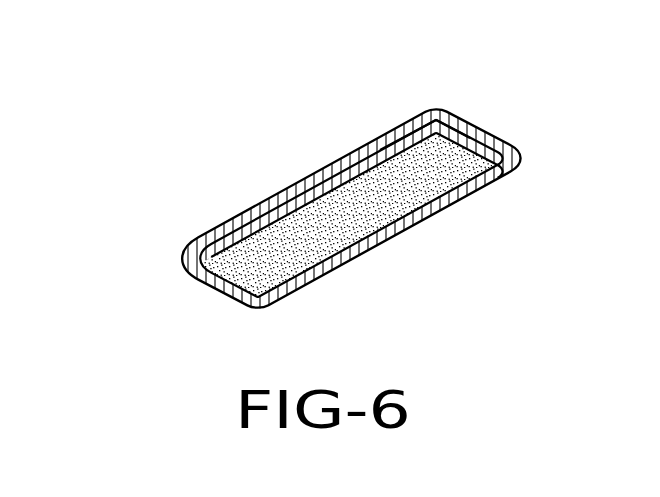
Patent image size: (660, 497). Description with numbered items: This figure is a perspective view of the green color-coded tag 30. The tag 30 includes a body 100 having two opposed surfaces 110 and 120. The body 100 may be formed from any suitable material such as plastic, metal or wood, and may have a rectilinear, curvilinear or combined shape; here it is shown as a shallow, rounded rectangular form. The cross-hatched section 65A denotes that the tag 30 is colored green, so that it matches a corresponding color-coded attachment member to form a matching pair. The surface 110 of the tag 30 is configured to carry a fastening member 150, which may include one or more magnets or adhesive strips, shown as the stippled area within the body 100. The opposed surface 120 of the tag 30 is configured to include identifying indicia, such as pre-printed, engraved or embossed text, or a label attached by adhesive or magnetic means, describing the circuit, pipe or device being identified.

The tag 30 is at (379, 173).
The body 100 is at (409, 173).
The surface 110 is at (508, 166).
The opposed surface 120 is at (322, 168).
The fastening member 150 is at (355, 232).
The cross-hatched section 65A is at (407, 130).